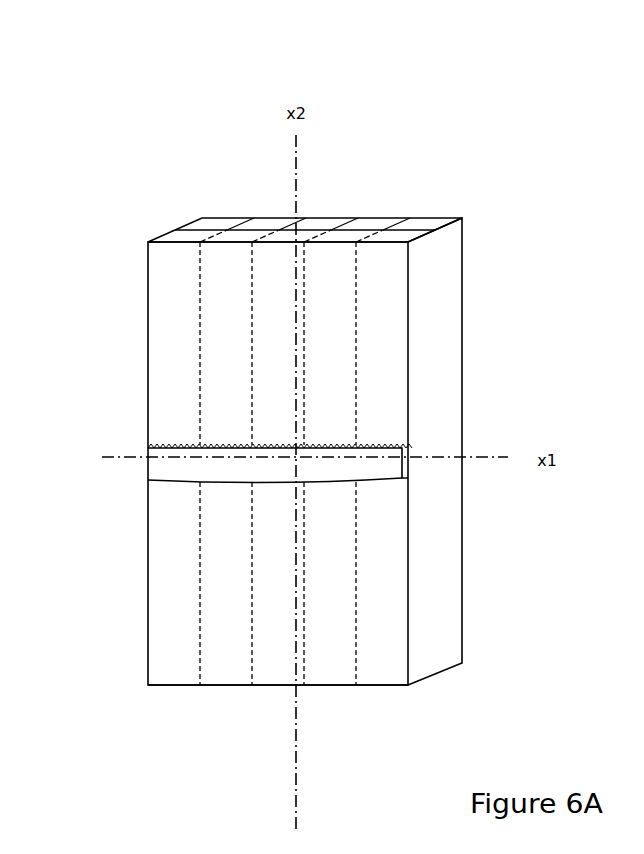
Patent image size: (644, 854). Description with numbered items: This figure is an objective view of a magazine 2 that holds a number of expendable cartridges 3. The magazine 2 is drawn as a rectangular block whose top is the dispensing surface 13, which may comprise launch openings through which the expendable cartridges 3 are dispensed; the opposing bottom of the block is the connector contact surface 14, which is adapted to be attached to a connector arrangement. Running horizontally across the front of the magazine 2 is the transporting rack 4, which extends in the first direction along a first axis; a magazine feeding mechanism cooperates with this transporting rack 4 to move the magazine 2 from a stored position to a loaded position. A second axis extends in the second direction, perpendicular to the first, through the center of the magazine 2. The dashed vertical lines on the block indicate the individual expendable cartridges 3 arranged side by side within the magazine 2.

The magazine 2 is at (264, 430).
The expendable cartridge 3 is at (393, 230).
The transporting rack 4 is at (170, 457).
The dispensing surface 13 is at (160, 232).
The connector contact surface 14 is at (200, 685).